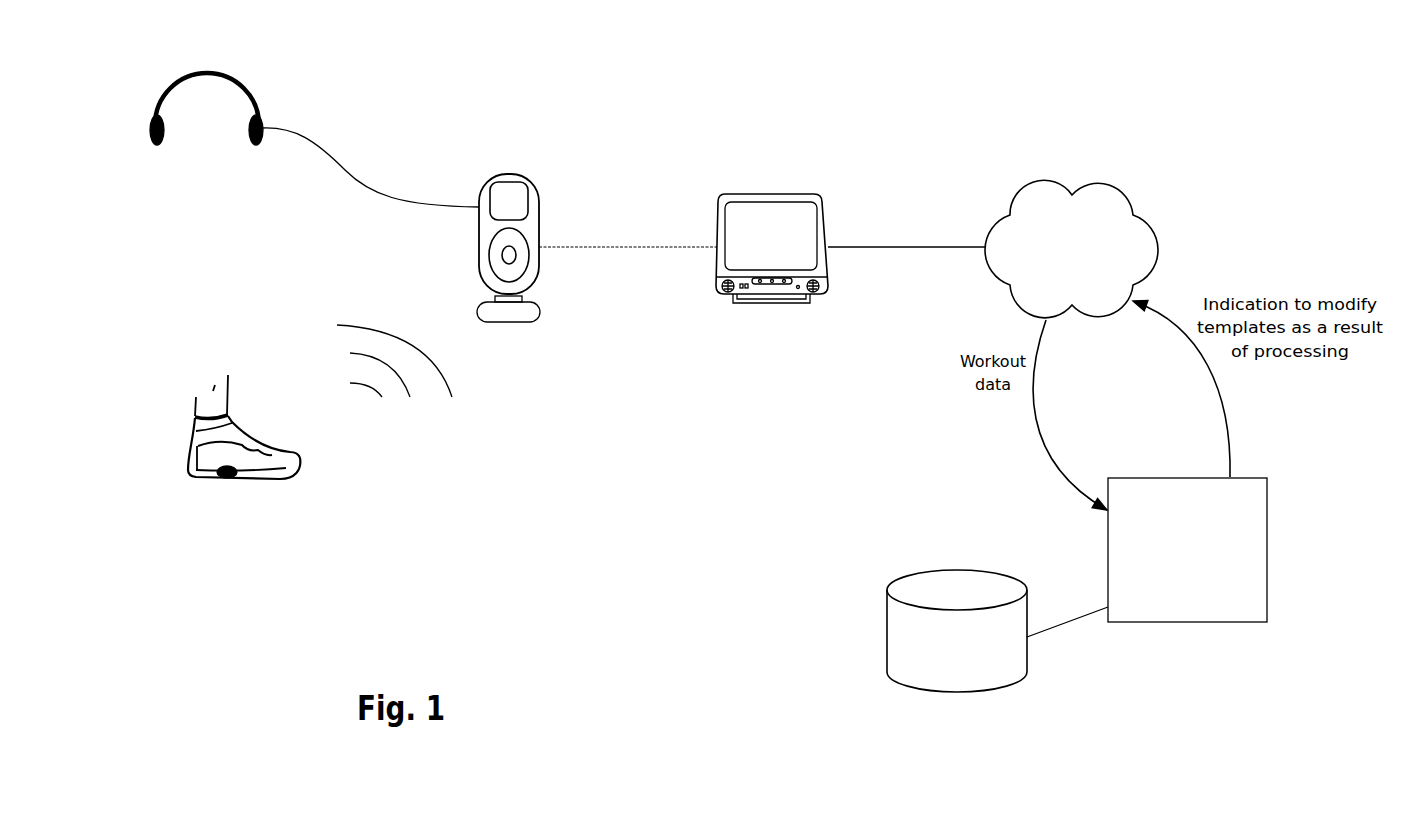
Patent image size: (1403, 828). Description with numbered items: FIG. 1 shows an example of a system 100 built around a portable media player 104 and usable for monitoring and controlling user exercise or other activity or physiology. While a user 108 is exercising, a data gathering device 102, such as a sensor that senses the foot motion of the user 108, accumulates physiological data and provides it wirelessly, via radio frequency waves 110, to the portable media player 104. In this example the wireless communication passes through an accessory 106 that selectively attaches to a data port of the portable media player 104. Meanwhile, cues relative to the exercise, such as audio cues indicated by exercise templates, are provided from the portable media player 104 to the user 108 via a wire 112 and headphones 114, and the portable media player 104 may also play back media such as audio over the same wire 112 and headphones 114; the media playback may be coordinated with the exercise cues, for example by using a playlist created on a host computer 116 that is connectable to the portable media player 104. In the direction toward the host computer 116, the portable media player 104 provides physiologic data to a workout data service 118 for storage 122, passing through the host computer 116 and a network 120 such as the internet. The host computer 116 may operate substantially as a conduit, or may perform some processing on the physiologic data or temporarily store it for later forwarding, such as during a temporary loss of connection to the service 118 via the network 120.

The system 100 is at (395, 585).
The data gathering device 102 is at (225, 482).
The portable media player 104 is at (523, 200).
The accessory 106 is at (515, 320).
The user 108 is at (192, 408).
The radio frequency waves 110 is at (318, 352).
The wire 112 is at (352, 187).
The headphones 114 is at (210, 73).
The host computer 116 is at (767, 262).
The workout data service 118 is at (1187, 550).
The network 120 is at (1071, 249).
The storage 122 is at (997, 631).